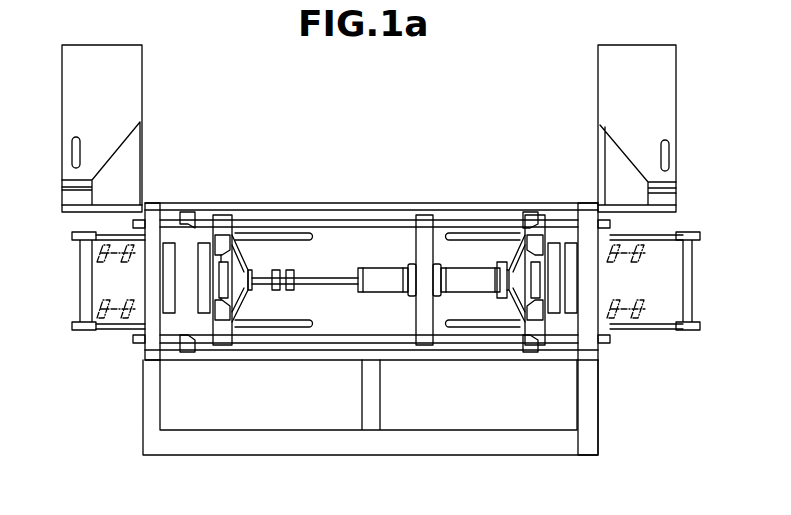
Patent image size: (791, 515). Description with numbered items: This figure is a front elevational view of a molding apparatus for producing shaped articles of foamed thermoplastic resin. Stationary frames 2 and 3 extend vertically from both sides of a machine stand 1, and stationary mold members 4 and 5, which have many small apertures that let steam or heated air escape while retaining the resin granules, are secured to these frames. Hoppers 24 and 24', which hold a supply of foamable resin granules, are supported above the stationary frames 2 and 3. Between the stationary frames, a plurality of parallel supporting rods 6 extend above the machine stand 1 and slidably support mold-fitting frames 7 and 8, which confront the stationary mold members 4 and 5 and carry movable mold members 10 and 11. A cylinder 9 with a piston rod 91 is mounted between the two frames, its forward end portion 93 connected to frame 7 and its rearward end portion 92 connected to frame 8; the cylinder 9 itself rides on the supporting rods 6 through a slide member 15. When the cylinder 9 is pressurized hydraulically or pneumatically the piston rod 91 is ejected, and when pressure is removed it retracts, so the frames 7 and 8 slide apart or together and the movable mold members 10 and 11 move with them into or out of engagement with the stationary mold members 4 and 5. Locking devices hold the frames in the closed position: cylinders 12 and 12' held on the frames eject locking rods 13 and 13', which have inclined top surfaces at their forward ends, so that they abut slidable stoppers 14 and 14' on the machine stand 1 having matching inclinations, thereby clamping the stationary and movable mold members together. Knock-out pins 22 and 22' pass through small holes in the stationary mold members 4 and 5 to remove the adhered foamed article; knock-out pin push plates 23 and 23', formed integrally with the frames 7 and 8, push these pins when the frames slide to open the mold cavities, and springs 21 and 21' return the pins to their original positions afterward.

The machine stand 1 is at (356, 447).
The stationary frame 2 is at (155, 208).
The stationary frame 3 is at (586, 212).
The stationary mold member 4 is at (166, 292).
The stationary mold member 5 is at (575, 302).
The supporting rods 6 is at (316, 211).
The mold-fitting frame 7 is at (248, 312).
The mold-fitting frame 8 is at (508, 262).
The cylinder 9 is at (396, 283).
The movable mold member 10 is at (205, 300).
The movable mold member 11 is at (555, 305).
The cylinder 12 is at (248, 272).
The cylinder 12' is at (499, 289).
The locking rod 13 is at (228, 279).
The locking rod 13' is at (535, 278).
The stopper 14 is at (184, 279).
The stopper 14' is at (512, 278).
The slide member 15 is at (418, 250).
The spring 21 is at (84, 282).
The spring 21' is at (646, 292).
The knock-out pins 22 is at (100, 302).
The knock-out pins 22' is at (645, 281).
The knock-out pin push plate 23 is at (60, 281).
The knock-out pin push plate 23' is at (706, 281).
The hopper 24 is at (81, 128).
The hopper 24' is at (662, 128).
The piston rod 91 is at (326, 286).
The rearward end portion 92 is at (499, 266).
The forward end portion 93 is at (258, 292).